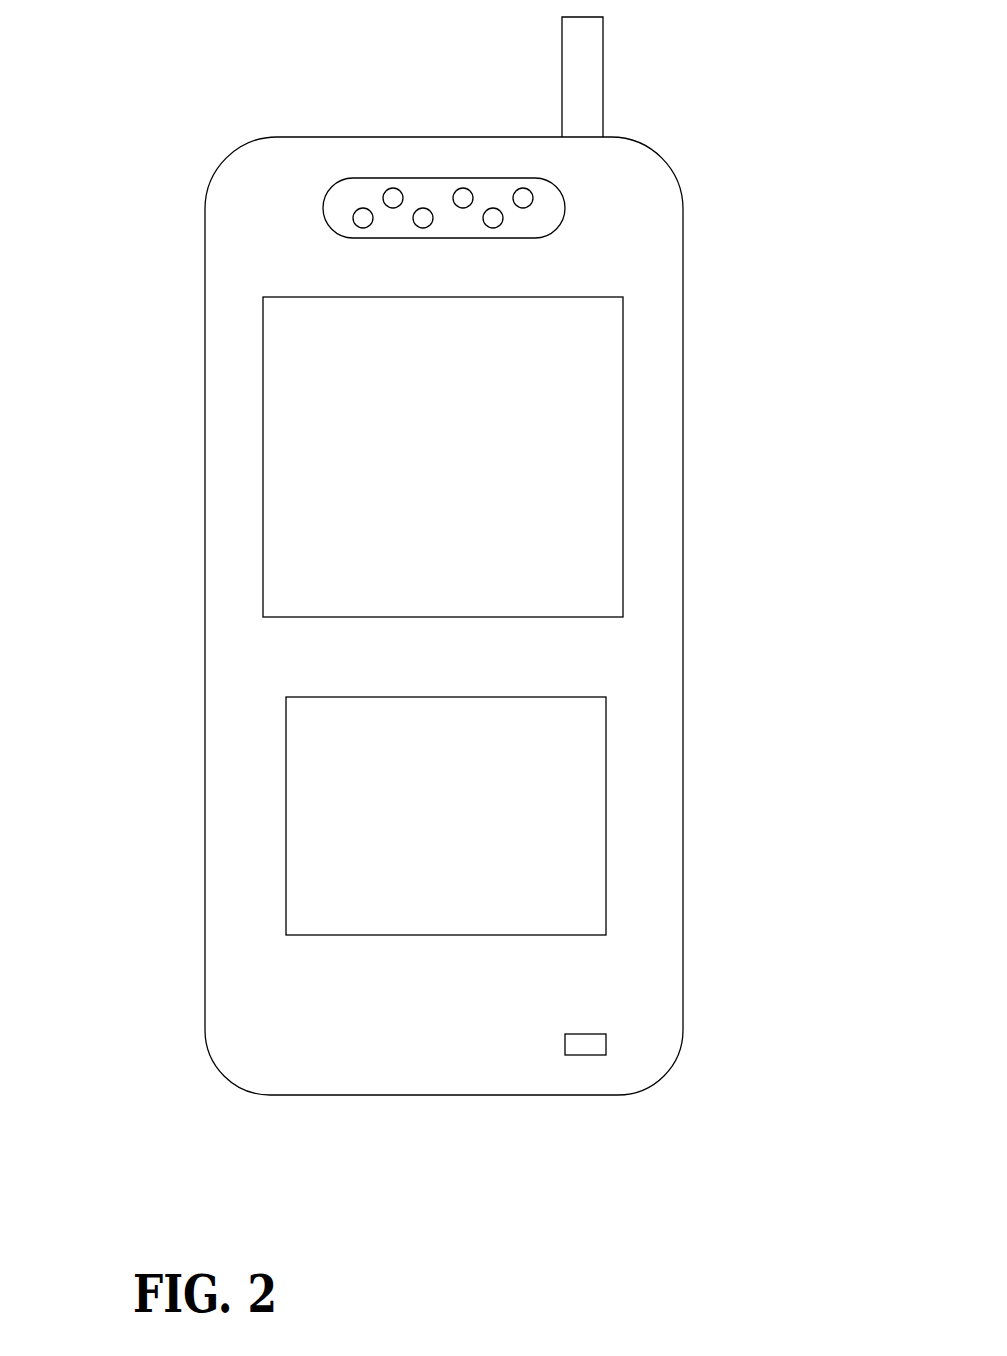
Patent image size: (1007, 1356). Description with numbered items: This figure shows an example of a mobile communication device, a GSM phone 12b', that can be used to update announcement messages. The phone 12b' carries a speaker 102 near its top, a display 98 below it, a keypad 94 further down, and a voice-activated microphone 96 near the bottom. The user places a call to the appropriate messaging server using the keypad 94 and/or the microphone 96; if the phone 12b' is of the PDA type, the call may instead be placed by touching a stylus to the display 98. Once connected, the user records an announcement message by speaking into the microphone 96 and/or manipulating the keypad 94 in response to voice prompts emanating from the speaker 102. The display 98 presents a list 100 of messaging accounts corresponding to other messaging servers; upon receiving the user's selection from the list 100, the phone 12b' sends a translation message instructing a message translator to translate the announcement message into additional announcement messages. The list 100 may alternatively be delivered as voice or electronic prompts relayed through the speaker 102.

The GSM phone 12b' is at (444, 547).
The speaker 102 is at (565, 208).
The display 98 is at (623, 457).
The list of messaging accounts 100 is at (272, 396).
The keypad 94 is at (606, 815).
The voice-activated microphone 96 is at (606, 1045).